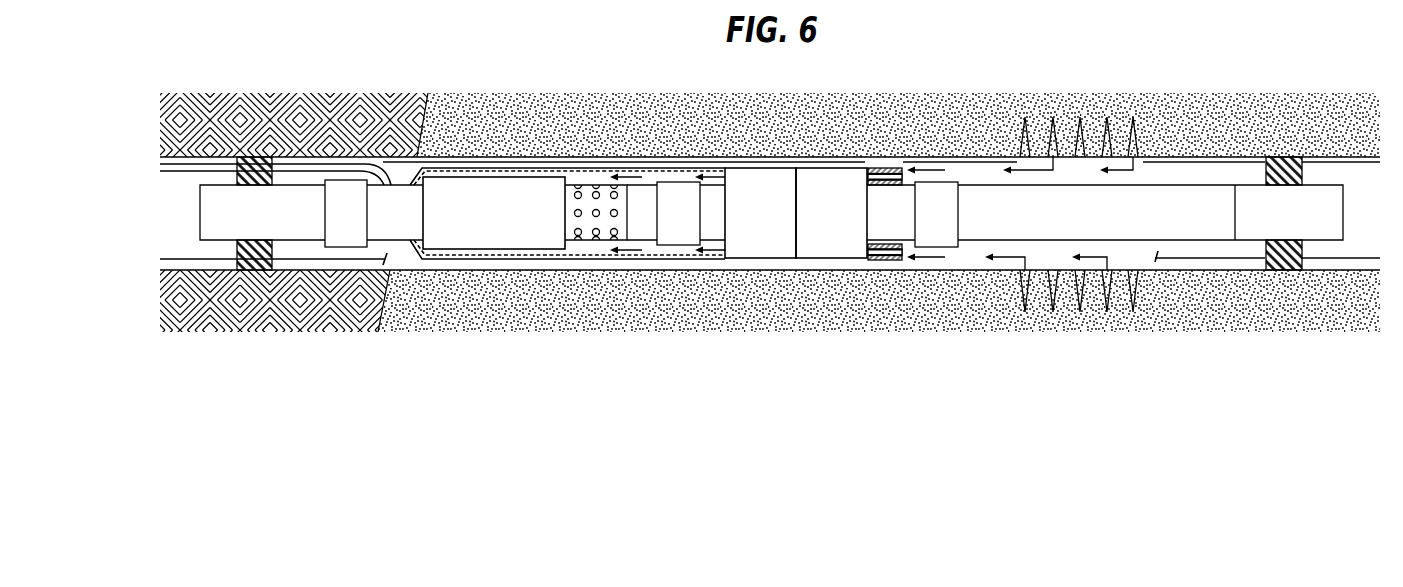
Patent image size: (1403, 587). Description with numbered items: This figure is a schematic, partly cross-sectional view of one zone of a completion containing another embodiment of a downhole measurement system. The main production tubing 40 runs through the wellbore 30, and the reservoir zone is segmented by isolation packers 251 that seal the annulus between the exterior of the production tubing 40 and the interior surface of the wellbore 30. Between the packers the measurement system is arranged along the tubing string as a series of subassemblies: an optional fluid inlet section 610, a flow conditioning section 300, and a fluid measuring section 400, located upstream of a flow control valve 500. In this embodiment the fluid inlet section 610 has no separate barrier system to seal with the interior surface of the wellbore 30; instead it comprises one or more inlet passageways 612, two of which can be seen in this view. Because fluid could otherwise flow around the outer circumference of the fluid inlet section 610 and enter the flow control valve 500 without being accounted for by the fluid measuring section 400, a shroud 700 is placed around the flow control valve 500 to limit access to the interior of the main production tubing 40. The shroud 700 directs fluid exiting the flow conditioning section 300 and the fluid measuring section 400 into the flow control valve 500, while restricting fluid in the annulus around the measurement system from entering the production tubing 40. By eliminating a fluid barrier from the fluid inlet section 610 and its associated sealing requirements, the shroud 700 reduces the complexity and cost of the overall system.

The wellbore 30 is at (1213, 160).
The production tubing 40 is at (251, 225).
The isolation packer 251 is at (255, 157).
The flow conditioning section 300 is at (838, 247).
The fluid measuring section 400 is at (760, 247).
The flow control valve 500 is at (587, 185).
The fluid inlet section 610 is at (901, 157).
The inlet passageway 612 is at (878, 176).
The shroud 700 is at (472, 168).